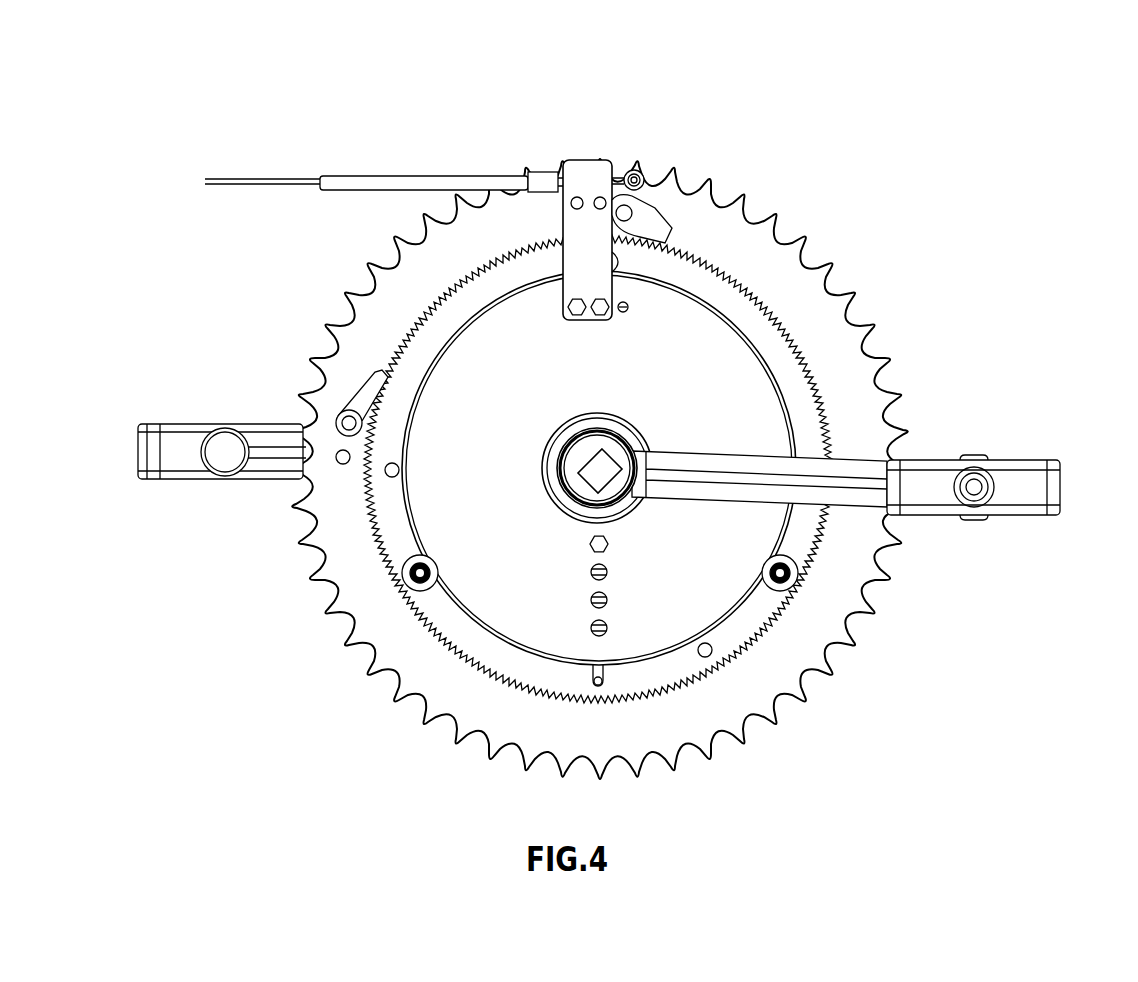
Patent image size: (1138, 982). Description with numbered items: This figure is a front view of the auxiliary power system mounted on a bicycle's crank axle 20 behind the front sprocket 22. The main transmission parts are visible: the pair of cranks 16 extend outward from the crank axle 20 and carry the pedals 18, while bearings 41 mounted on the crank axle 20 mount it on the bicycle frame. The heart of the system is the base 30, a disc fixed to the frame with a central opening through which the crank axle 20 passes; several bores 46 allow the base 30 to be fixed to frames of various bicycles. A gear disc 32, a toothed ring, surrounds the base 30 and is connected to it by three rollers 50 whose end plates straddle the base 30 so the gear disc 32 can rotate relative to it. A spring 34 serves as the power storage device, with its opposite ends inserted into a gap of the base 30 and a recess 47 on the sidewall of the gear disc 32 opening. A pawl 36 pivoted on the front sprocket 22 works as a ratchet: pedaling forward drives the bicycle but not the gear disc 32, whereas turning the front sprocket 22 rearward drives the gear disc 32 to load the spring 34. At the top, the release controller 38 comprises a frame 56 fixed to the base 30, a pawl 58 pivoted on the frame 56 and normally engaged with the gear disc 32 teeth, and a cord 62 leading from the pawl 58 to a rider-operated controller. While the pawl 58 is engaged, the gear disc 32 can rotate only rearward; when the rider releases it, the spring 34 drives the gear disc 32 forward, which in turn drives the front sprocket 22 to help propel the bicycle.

The crank 16 is at (840, 470).
The pedal 18 is at (1055, 462).
The crank axle 20 is at (602, 470).
The front sprocket 22 is at (327, 512).
The base 30 is at (487, 333).
The gear disc 32 is at (380, 550).
The spring 34 is at (727, 620).
The pawl 36 is at (347, 410).
The release controller 38 is at (530, 154).
The bearings 41 is at (613, 412).
The bores 46 is at (595, 603).
The recesses 47 is at (599, 686).
The rollers 50 is at (792, 582).
The frame 56 is at (600, 280).
The pawl 58 is at (652, 235).
The cord 62 is at (283, 178).